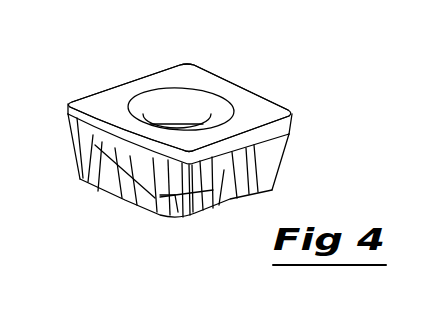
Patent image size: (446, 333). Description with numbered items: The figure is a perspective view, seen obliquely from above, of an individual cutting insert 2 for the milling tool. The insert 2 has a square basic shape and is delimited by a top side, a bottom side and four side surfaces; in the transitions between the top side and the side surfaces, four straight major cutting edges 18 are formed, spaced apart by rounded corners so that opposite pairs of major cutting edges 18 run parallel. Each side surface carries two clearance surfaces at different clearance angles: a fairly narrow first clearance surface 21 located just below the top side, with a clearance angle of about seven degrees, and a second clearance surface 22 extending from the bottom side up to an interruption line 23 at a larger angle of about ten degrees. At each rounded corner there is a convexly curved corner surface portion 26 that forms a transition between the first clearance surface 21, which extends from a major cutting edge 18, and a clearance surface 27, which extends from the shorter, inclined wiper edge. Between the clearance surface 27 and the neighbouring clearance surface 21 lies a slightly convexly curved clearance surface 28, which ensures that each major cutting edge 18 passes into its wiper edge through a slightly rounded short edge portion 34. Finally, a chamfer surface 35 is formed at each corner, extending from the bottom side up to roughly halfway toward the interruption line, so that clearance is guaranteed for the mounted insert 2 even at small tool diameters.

The cutting insert 2 is at (88, 92).
The major cutting edge 18 is at (132, 80).
The first clearance surface 21 is at (263, 137).
The second clearance surface 22 is at (291, 188).
The interruption line 23 is at (276, 142).
The convexly curved corner surface portion 26 is at (153, 185).
The clearance surface 27 is at (177, 216).
The slightly convexly curved clearance surface 28 is at (219, 205).
The short edge portion 34 is at (189, 150).
The chamfer surface 35 is at (177, 205).